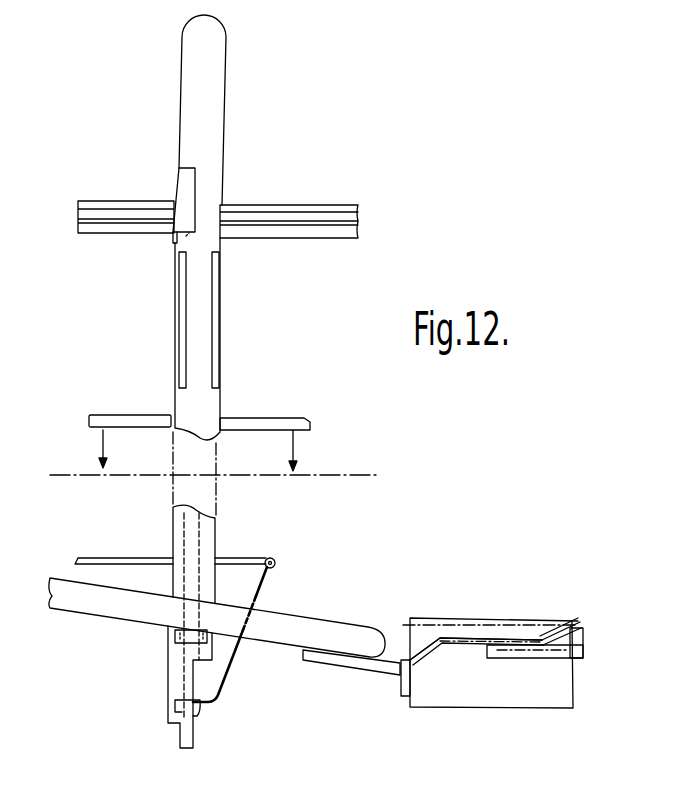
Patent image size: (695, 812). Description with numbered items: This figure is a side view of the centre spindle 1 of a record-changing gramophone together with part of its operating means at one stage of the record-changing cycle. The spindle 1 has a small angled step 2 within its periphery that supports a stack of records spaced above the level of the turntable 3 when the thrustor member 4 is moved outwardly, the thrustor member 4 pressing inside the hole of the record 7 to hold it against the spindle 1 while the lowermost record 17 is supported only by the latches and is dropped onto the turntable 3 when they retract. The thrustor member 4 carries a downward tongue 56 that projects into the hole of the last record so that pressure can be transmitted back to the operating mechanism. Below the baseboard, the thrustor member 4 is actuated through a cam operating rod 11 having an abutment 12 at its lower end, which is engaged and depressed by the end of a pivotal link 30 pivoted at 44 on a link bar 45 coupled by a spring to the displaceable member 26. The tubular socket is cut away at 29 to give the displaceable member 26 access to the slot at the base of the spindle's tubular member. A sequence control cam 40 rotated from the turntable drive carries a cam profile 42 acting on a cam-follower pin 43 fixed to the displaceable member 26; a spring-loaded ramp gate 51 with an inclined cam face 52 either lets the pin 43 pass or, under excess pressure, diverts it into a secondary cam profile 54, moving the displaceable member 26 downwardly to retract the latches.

The centre spindle 1 is at (233, 107).
The angled step 2 is at (221, 239).
The turntable 3 is at (343, 477).
The thrustor member 4 is at (178, 182).
The record 7 is at (358, 238).
The cam operating rod 11 is at (172, 518).
The abutment 12 is at (200, 712).
The lowermost record 17 is at (287, 417).
The displaceable member 26 is at (333, 625).
The cut-away 29 is at (177, 637).
The pivotal link 30 is at (232, 663).
The sequence control cam 40 is at (573, 712).
The cam profile 42 is at (425, 625).
The cam-follower pin 43 is at (373, 670).
The pivot 44 is at (273, 558).
The link bar 45 is at (182, 302).
The spring-loaded ramp gate 51 is at (578, 651).
The inclined cam face 52 is at (555, 635).
The secondary cam profile 54 is at (455, 647).
The downward tongue 56 is at (173, 236).